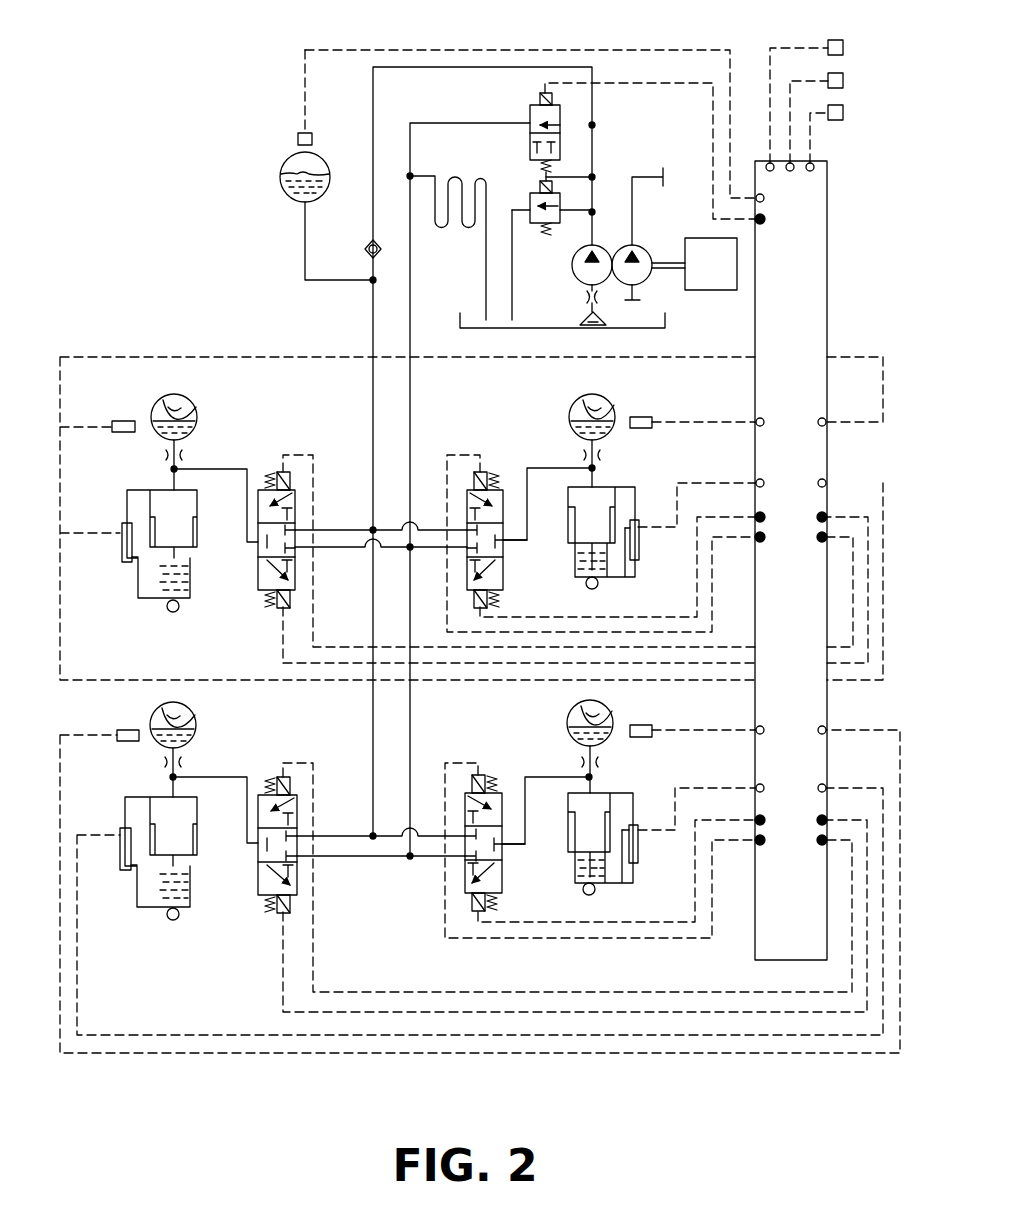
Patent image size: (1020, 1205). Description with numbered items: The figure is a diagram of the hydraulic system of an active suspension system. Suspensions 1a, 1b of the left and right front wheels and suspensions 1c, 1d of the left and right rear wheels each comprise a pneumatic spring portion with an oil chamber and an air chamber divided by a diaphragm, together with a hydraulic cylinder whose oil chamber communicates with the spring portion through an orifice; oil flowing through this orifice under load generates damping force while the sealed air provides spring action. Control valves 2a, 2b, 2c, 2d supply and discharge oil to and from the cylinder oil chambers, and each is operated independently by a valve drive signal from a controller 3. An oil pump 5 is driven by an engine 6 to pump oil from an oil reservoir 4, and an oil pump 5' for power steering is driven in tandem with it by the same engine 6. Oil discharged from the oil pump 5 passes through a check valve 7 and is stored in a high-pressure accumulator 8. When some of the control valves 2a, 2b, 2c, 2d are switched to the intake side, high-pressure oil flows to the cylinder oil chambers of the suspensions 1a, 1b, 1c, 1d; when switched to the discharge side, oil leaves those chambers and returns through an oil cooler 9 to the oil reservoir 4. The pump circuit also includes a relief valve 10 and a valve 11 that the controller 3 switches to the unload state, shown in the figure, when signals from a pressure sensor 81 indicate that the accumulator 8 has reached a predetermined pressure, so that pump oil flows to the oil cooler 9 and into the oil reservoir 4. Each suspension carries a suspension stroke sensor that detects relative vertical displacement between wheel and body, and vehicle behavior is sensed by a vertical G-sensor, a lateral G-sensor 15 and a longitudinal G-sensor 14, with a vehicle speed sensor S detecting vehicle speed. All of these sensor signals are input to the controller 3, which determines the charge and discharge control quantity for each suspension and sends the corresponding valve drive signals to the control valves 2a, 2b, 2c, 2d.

The suspension of left front wheel 1a is at (195, 565).
The suspension of right front wheel 1b is at (563, 538).
The suspension of left rear wheel 1c is at (198, 870).
The suspension of right rear wheel 1d is at (560, 853).
The control valve 2a is at (300, 505).
The control valve 2b is at (462, 510).
The control valve 2c is at (302, 810).
The control valve 2d is at (461, 870).
The controller 3 is at (828, 327).
The oil reservoir 4 is at (537, 327).
The oil pump 5 is at (597, 266).
The oil pump for power steering 5' is at (648, 234).
The engine 6 is at (710, 291).
The check valve 7 is at (365, 249).
The high-pressure accumulator 8 is at (289, 190).
The pressure sensor 81 is at (298, 132).
The oil cooler 9 is at (456, 230).
The relief valve 10 is at (530, 203).
The valve 11 is at (530, 139).
The longitudinal G-sensor 14 is at (843, 80).
The lateral G-sensor 15 is at (843, 47).
The vehicle speed sensor S is at (843, 112).